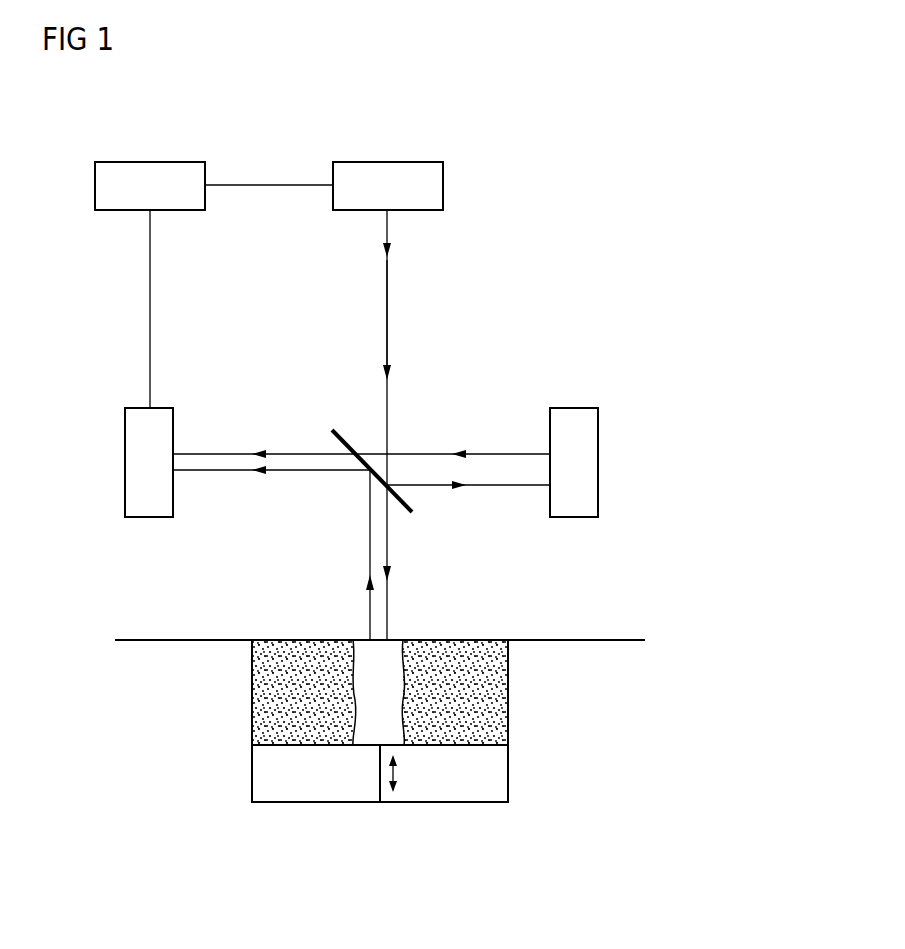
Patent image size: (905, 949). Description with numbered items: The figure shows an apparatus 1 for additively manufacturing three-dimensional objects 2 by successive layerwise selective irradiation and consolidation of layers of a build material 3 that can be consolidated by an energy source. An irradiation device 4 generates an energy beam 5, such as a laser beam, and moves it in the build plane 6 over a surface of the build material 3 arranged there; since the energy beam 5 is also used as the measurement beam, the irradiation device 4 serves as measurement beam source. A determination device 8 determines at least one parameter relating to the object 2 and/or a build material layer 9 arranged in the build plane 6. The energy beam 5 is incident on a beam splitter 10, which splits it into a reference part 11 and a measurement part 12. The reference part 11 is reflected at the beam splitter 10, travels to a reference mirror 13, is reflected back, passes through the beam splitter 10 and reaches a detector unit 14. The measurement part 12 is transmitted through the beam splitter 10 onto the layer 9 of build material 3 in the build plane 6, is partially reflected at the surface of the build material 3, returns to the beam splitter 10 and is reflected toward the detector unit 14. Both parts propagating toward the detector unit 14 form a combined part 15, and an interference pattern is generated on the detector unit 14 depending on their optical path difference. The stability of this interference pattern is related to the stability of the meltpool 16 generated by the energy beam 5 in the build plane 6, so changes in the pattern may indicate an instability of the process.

The apparatus 1 is at (463, 98).
The object 2 is at (366, 702).
The build material 3 is at (505, 720).
The irradiation device 4 is at (388, 162).
The energy beam 5 is at (389, 316).
The build plane 6 is at (458, 625).
The determination device 8 is at (150, 162).
The build material layer 9 is at (366, 638).
The beam splitter 10 is at (357, 434).
The reference part 11 is at (212, 452).
The measurement part 12 is at (303, 473).
The reference mirror 13 is at (577, 408).
The detector unit 14 is at (125, 460).
The combined part 15 is at (231, 482).
The meltpool 16 is at (391, 636).